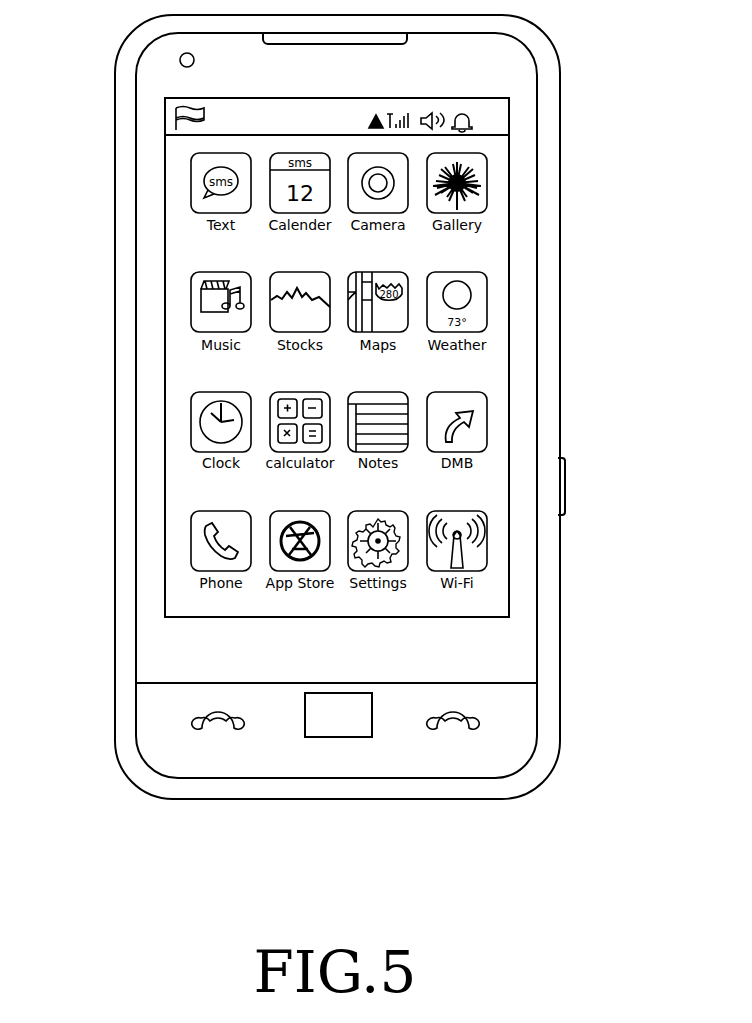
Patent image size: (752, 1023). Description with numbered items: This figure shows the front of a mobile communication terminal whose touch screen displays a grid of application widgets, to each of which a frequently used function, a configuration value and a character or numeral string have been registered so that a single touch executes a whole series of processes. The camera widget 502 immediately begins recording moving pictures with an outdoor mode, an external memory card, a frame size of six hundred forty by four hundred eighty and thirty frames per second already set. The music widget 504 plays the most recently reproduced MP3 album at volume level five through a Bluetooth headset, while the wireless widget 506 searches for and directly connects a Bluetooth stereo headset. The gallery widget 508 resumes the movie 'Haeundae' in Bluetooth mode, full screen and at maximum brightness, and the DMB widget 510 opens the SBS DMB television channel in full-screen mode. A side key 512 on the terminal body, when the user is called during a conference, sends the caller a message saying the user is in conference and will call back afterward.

The moving picture capture widget 502 is at (393, 165).
The MP3 playback widget 504 is at (197, 300).
The Bluetooth headset connection widget 506 is at (473, 555).
The movie resume widget 508 is at (483, 165).
The DMB TV channel widget 510 is at (475, 425).
The conference reply message button 512 is at (565, 487).